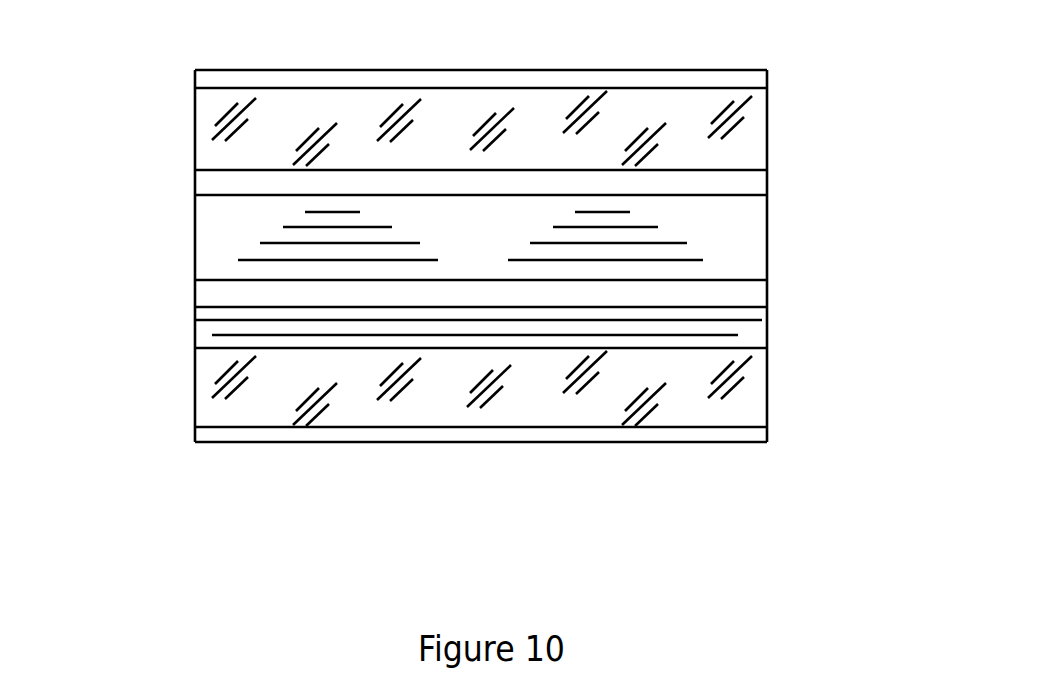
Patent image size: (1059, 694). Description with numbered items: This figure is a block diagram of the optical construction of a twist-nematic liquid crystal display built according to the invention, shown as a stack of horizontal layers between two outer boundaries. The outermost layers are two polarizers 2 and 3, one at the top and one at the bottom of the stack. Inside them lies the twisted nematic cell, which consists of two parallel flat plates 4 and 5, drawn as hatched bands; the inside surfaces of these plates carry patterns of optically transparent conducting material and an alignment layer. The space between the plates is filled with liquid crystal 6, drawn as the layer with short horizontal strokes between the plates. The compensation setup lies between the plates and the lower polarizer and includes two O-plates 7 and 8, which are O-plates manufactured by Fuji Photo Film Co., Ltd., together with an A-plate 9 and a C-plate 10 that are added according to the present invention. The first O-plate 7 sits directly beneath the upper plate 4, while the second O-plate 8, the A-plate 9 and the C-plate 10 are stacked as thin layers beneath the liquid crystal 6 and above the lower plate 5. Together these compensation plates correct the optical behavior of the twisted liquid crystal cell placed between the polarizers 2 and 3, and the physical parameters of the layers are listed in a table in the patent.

The polarizer 2 is at (750, 80).
The polarizer 3 is at (743, 433).
The flat plate 4 is at (212, 105).
The flat plate 5 is at (218, 367).
The liquid crystal 6 is at (217, 230).
The O-plate 7 is at (740, 182).
The O-plate 8 is at (740, 295).
The A-plate 9 is at (740, 318).
The C-plate 10 is at (743, 335).